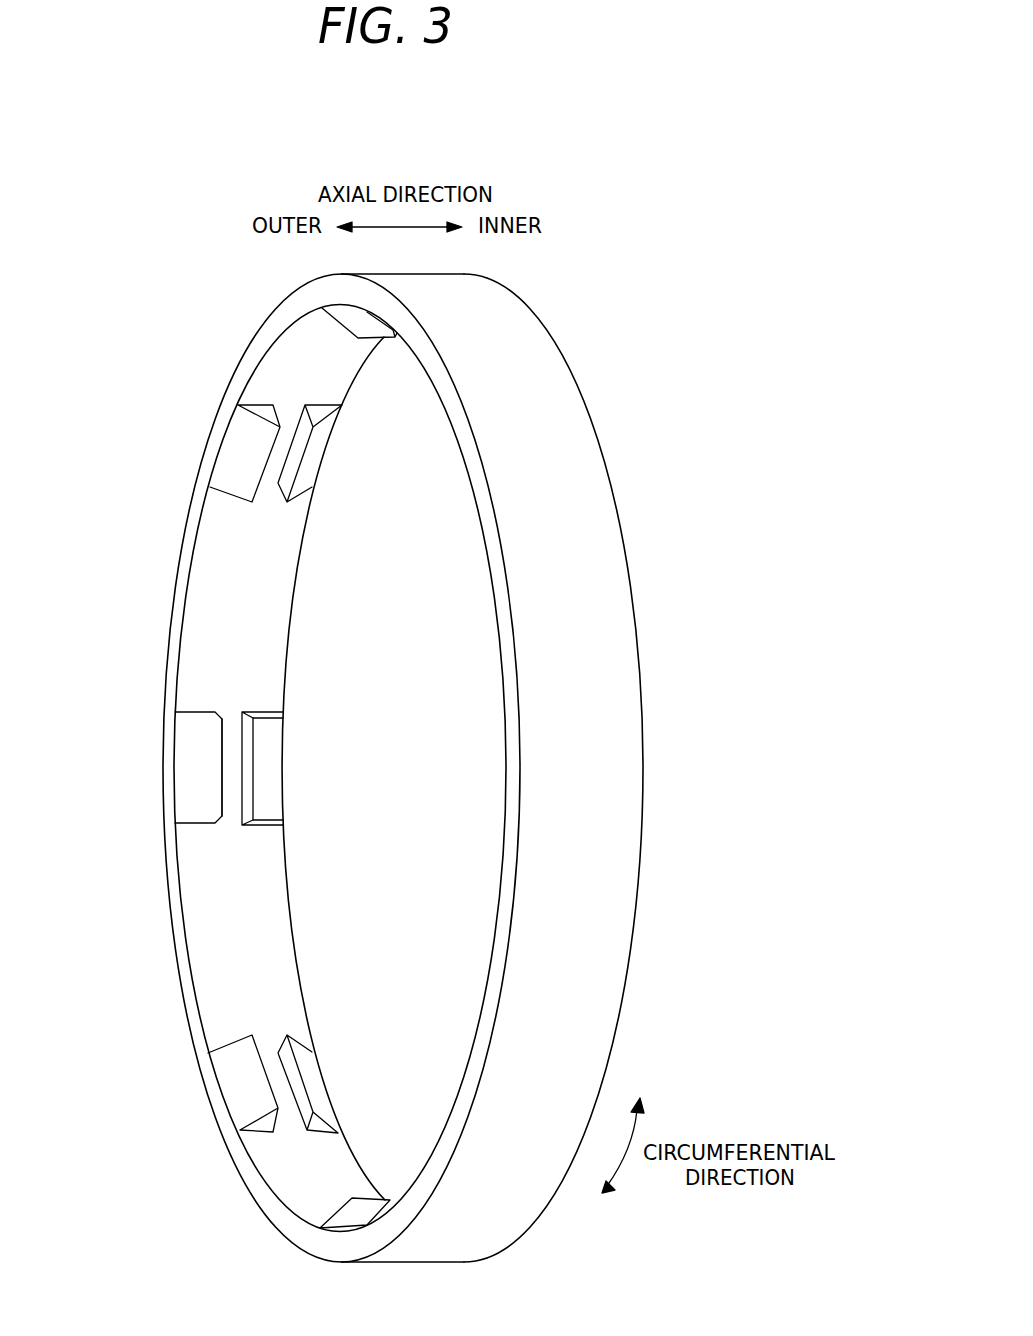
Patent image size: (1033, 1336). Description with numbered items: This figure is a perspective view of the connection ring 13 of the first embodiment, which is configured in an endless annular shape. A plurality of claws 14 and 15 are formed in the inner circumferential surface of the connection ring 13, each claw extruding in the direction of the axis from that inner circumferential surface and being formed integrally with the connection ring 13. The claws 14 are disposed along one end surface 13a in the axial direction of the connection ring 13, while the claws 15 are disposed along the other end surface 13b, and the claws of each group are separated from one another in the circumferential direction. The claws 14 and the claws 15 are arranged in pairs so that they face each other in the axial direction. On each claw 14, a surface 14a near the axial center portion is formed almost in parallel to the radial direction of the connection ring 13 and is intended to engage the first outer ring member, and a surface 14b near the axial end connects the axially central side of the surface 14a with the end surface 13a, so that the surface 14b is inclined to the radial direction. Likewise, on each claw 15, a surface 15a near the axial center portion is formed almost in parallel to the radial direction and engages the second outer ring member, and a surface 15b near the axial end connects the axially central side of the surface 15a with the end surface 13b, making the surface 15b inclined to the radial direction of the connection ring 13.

The connection ring 13 is at (450, 768).
The one end surface 13a is at (257, 350).
The other end surface 13b is at (642, 677).
The claw 14 is at (229, 768).
The surface near the center portion of claw 14 14a is at (221, 790).
The surface near the end of claw 14 14b is at (182, 767).
The claw 15 is at (325, 769).
The surface near the center portion of claw 15 15a is at (250, 748).
The surface near the end of claw 15 15b is at (270, 760).